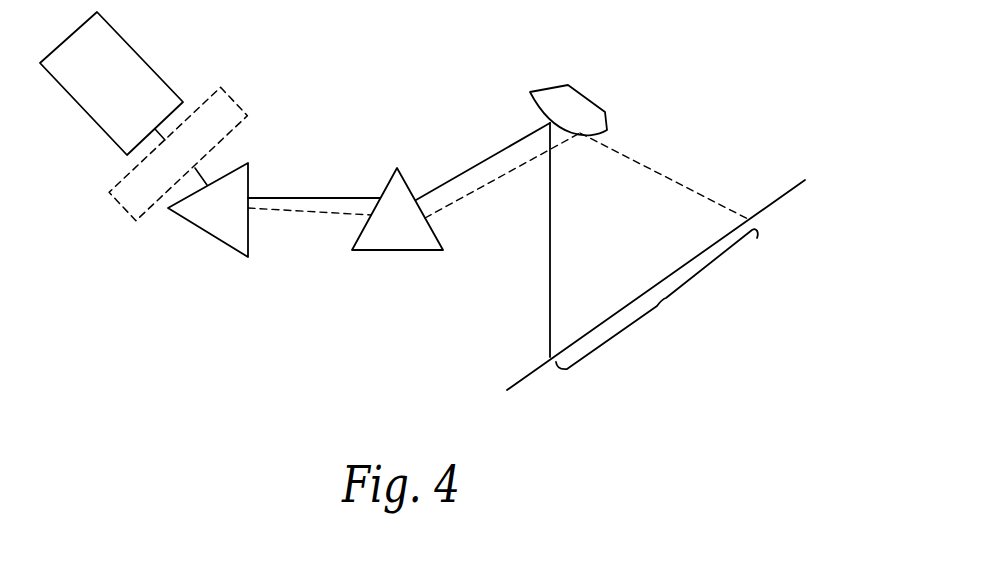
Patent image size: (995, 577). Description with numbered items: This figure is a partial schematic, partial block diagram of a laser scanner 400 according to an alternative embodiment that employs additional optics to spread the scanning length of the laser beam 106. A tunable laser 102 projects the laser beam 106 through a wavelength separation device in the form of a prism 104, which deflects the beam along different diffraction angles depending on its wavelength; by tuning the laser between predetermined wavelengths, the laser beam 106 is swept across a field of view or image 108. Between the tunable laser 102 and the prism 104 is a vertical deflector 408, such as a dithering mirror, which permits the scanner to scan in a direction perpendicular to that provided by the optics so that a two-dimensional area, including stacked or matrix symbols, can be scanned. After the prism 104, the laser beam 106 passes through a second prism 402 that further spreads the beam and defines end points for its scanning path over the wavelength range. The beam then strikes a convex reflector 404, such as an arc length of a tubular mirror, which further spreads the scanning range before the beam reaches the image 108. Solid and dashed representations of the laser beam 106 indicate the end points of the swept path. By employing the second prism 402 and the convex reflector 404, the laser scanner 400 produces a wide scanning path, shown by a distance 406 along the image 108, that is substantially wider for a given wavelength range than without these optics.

The laser scanner 400 is at (157, 287).
The tunable laser 102 is at (140, 110).
The vertical deflector 408 is at (230, 97).
The prism 104 is at (237, 225).
The second prism 402 is at (411, 235).
The laser beam 106 is at (210, 178).
The convex reflector 404 is at (557, 100).
The image 108 is at (770, 200).
The distance 406 is at (666, 299).